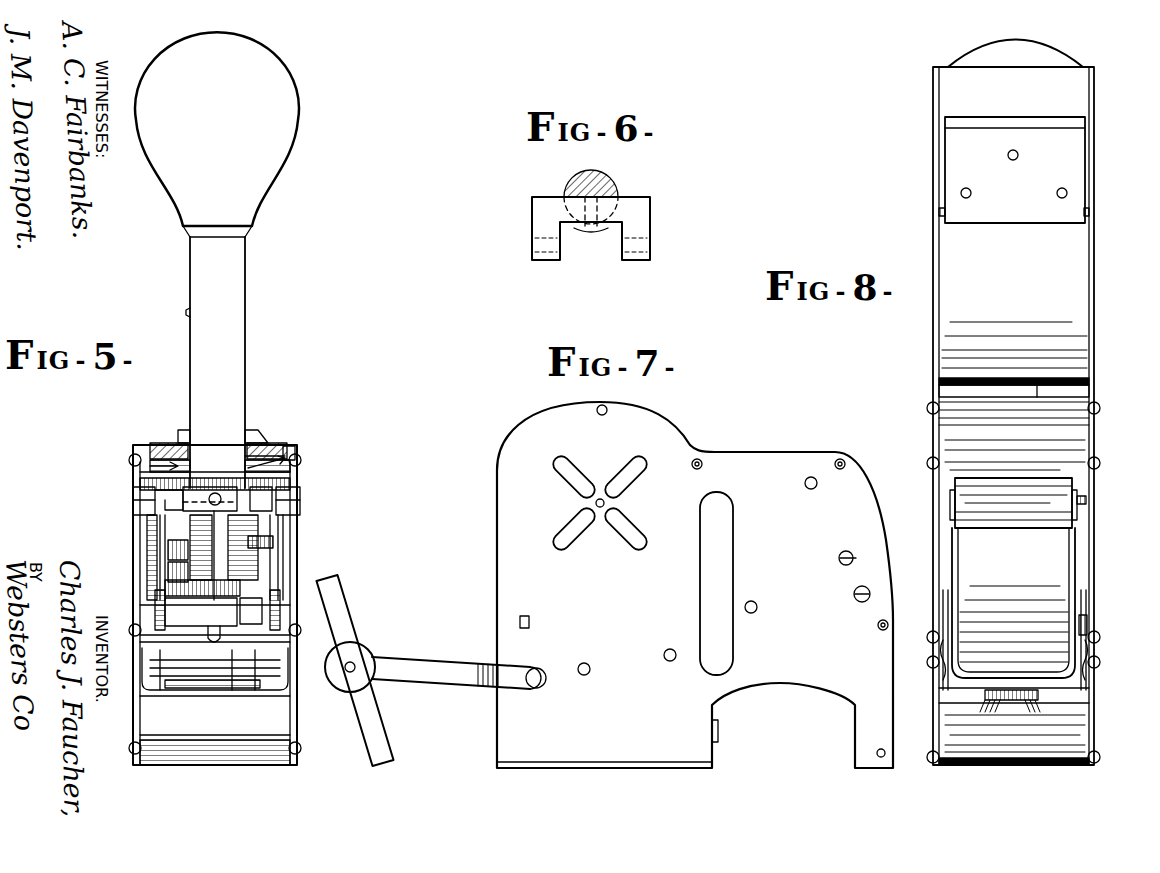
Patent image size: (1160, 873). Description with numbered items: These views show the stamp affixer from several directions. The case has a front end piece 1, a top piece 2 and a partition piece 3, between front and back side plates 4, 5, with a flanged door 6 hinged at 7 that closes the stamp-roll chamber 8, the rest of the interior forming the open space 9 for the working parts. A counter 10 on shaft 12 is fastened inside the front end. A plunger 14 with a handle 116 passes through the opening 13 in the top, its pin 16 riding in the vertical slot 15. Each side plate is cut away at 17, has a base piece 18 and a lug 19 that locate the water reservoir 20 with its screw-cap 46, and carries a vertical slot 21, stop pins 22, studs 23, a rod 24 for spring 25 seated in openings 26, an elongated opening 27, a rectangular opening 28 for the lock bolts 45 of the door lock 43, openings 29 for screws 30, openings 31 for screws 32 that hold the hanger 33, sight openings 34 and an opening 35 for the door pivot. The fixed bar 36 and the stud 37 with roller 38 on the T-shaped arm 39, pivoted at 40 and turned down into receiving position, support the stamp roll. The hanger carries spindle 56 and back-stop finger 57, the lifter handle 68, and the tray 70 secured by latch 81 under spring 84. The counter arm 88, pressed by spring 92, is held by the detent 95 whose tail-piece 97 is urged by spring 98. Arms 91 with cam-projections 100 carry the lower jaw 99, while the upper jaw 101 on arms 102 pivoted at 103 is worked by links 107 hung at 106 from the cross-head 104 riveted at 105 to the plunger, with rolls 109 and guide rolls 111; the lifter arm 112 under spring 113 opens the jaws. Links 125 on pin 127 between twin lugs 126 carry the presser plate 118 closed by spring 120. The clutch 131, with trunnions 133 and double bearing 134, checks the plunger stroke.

In FIG. 5, the front end piece 1 is at (215, 680).
In FIG. 5, the top piece 2 is at (270, 456).
In FIG. 8, the top piece 2 is at (1078, 397).
In FIG. 8, the partition piece 3 is at (1013, 552).
In FIG. 5, the front side plate 4 is at (133, 695).
In FIG. 7, the front side plate 4 is at (695, 585).
In FIG. 8, the front side plate 4 is at (933, 542).
In FIG. 5, the back side plate 5 is at (290, 698).
In FIG. 8, the back side plate 5 is at (1094, 556).
In FIG. 8, the flanged door 6 is at (1013, 416).
In FIG. 8, the door pivot 7 is at (927, 410).
In FIG. 8, the stamp-roll chamber 8 is at (1075, 576).
In FIG. 5, the open space 9 is at (300, 530).
In FIG. 5, the counter 10 is at (258, 572).
In FIG. 5, the counter shaft 12 is at (273, 542).
In FIG. 5, the plunger opening 13 is at (255, 440).
In FIG. 5, the plunger 14 is at (245, 352).
In FIG. 6, the plunger 14 is at (610, 182).
In FIG. 8, the plunger 14 is at (997, 389).
In FIG. 5, the vertical slot 15 is at (178, 437).
In FIG. 5, the pin 16 is at (187, 313).
In FIG. 5, the cut-away opening 17 is at (140, 720).
In FIG. 7, the cut-away opening 17 is at (798, 724).
In FIG. 7, the base piece 18 is at (628, 768).
In FIG. 8, the base piece 18 is at (1040, 765).
In FIG. 7, the lug 19 is at (718, 735).
In FIG. 8, the water reservoir 20 is at (970, 752).
In FIG. 5, the vertical slot 21 is at (160, 530).
In FIG. 7, the vertical slot 21 is at (708, 600).
In FIG. 7, the stop pin 22 is at (767, 609).
In FIG. 5, the stud 23 is at (190, 545).
In FIG. 7, the stud 23 is at (831, 561).
In FIG. 5, the rod 24 is at (165, 608).
In FIG. 5, the spring 25 is at (165, 590).
In FIG. 7, the opening 26 is at (853, 595).
In FIG. 7, the elongated opening 27 is at (808, 490).
In FIG. 7, the rectangular opening 28 is at (529, 622).
In FIG. 7, the screw opening 29 is at (703, 465).
In FIG. 5, the screw 30 is at (130, 459).
In FIG. 8, the screw 30 is at (927, 465).
In FIG. 7, the hanger screw opening 31 is at (663, 657).
In FIG. 8, the hanger screw 32 is at (1104, 670).
In FIG. 8, the hanger 33 is at (1040, 695).
In FIG. 7, the sight opening 34 is at (578, 524).
In FIG. 7, the door pivot opening 35 is at (600, 416).
In FIG. 8, the fixed horizontal bar 36 is at (1086, 518).
In FIG. 5, the stud 37 is at (356, 670).
In FIG. 5, the roller 38 is at (362, 652).
In FIG. 8, the roller 38 is at (1005, 528).
In FIG. 5, the T-shaped arm 39 is at (448, 664).
In FIG. 8, the T-shaped arm 39 is at (952, 576).
In FIG. 7, the pivot 40 is at (544, 684).
In FIG. 8, the pivot 40 is at (975, 688).
In FIG. 8, the lock 43 is at (1015, 170).
In FIG. 8, the lock bolt 45 is at (938, 213).
In FIG. 8, the screw-cap 46 is at (1040, 707).
In FIG. 8, the spindle 56 is at (1080, 660).
In FIG. 8, the back-stop finger 57 is at (943, 615).
In FIG. 8, the handle 68 is at (942, 600).
In FIG. 8, the tray 70 is at (965, 703).
In FIG. 8, the latch 81 is at (1082, 616).
In FIG. 8, the spring 84 is at (1088, 625).
In FIG. 5, the operating arm 88 is at (305, 555).
In FIG. 5, the arm 91 is at (140, 650).
In FIG. 5, the spring 92 is at (261, 499).
In FIG. 5, the detent 95 is at (297, 482).
In FIG. 5, the tail-piece 97 is at (268, 452).
In FIG. 5, the spring 98 is at (293, 452).
In FIG. 5, the lower gripping jaw 99 is at (195, 672).
In FIG. 5, the cam-projection 100 is at (155, 605).
In FIG. 5, the upper gripping jaw 101 is at (175, 668).
In FIG. 5, the jaw arm 102 is at (142, 672).
In FIG. 5, the pivot 103 is at (162, 690).
In FIG. 5, the cross-head 104 is at (228, 486).
In FIG. 6, the cross-head 104 is at (648, 219).
In FIG. 5, the rivet 105 is at (210, 471).
In FIG. 6, the rivet 105 is at (575, 172).
In FIG. 5, the link pivot 106 is at (133, 500).
In FIG. 5, the link 107 is at (147, 540).
In FIG. 5, the roll 109 is at (185, 597).
In FIG. 5, the guide roll 111 is at (133, 512).
In FIG. 5, the lifter arm 112 is at (201, 612).
In FIG. 5, the spring 113 is at (158, 458).
In FIG. 5, the handle 116 is at (217, 134).
In FIG. 8, the handle 116 is at (1015, 54).
In FIG. 5, the presser plate 118 is at (240, 690).
In FIG. 5, the presser spring 120 is at (228, 690).
In FIG. 5, the link 125 is at (218, 624).
In FIG. 5, the twin lug 126 is at (168, 572).
In FIG. 5, the pin 127 is at (168, 550).
In FIG. 5, the clutch 131 is at (140, 470).
In FIG. 5, the trunnion 133 is at (140, 486).
In FIG. 5, the double bearing 134 is at (216, 493).